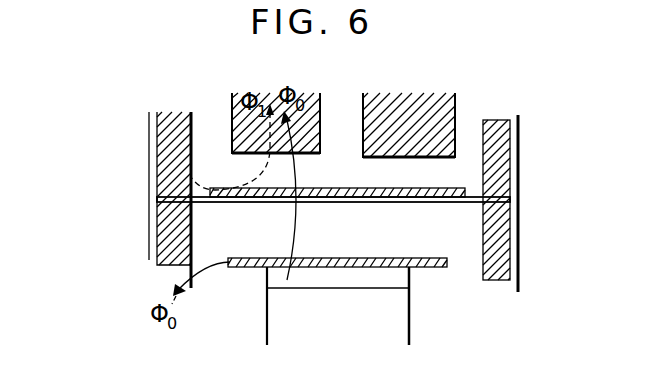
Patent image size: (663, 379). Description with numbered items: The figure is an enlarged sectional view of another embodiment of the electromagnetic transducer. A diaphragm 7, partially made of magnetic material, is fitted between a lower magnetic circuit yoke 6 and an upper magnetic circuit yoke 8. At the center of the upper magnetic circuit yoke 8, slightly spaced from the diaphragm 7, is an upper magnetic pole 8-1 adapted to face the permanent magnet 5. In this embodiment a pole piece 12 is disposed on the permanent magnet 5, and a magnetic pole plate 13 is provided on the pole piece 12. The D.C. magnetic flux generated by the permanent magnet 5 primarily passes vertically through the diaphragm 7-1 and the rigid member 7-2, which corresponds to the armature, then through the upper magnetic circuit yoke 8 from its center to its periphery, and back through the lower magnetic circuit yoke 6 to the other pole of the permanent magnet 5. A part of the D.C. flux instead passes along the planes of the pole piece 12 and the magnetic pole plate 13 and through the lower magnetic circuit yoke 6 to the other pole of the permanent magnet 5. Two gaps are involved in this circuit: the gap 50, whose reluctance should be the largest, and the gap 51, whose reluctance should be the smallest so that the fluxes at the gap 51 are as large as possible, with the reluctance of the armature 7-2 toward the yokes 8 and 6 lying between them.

The permanent magnet 5 is at (395, 330).
The lower magnetic circuit yoke 6 is at (158, 238).
The diaphragm 7 is at (447, 207).
The diaphragm 7-1 is at (475, 195).
The rigid member 7-2 is at (440, 183).
The upper magnetic circuit yoke 8 is at (170, 147).
The upper magnetic pole 8-1 is at (437, 118).
The pole piece 12 is at (407, 286).
The magnetic pole plate 13 is at (447, 265).
The gap 50 is at (398, 232).
The gap 51 is at (372, 113).